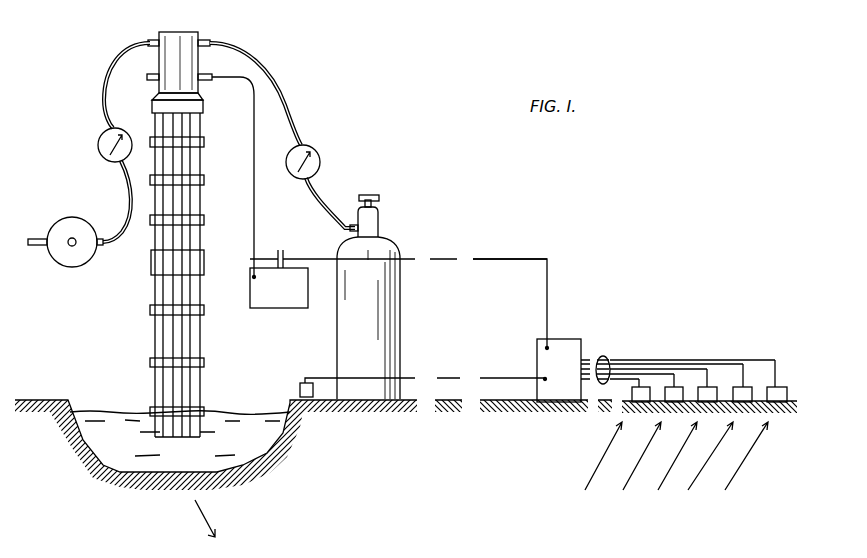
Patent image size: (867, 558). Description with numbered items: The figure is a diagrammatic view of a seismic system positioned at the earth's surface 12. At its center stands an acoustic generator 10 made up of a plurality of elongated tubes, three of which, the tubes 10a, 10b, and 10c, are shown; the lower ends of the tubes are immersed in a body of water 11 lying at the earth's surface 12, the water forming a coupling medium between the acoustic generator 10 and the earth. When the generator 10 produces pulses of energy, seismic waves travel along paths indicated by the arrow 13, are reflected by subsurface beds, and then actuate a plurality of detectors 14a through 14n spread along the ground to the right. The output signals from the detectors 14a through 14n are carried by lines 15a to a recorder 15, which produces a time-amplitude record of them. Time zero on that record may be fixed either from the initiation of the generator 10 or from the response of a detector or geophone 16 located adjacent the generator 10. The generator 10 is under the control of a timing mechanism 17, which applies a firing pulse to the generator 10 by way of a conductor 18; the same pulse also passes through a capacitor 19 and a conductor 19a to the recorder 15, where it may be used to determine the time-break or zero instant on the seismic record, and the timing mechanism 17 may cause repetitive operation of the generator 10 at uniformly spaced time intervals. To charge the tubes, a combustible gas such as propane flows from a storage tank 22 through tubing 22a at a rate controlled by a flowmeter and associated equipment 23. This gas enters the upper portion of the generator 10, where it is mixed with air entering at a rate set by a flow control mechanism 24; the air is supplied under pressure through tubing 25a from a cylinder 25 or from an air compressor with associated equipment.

The acoustic generator 10 is at (132, 327).
The tube 10a is at (200, 128).
The tube 10b is at (200, 211).
The tube 10c is at (160, 238).
The body of water 11 is at (237, 412).
The earth's surface 12 is at (50, 401).
The arrow 13 is at (198, 518).
The detector 14a is at (643, 393).
The detector 14n is at (778, 393).
The recorder 15 is at (560, 346).
The lines 15a is at (605, 356).
The detector or geophone 16 is at (302, 384).
The timing mechanism 17 is at (282, 302).
The conductor 18 is at (252, 156).
The capacitor 19 is at (290, 256).
The conductor 19a is at (487, 260).
The storage tank 22 is at (398, 255).
The tubing 22a is at (280, 84).
The flowmeter and associated equipment 23 is at (311, 150).
The flow control mechanism 24 is at (100, 141).
The cylinder 25 is at (72, 219).
The tubing 25a is at (106, 92).